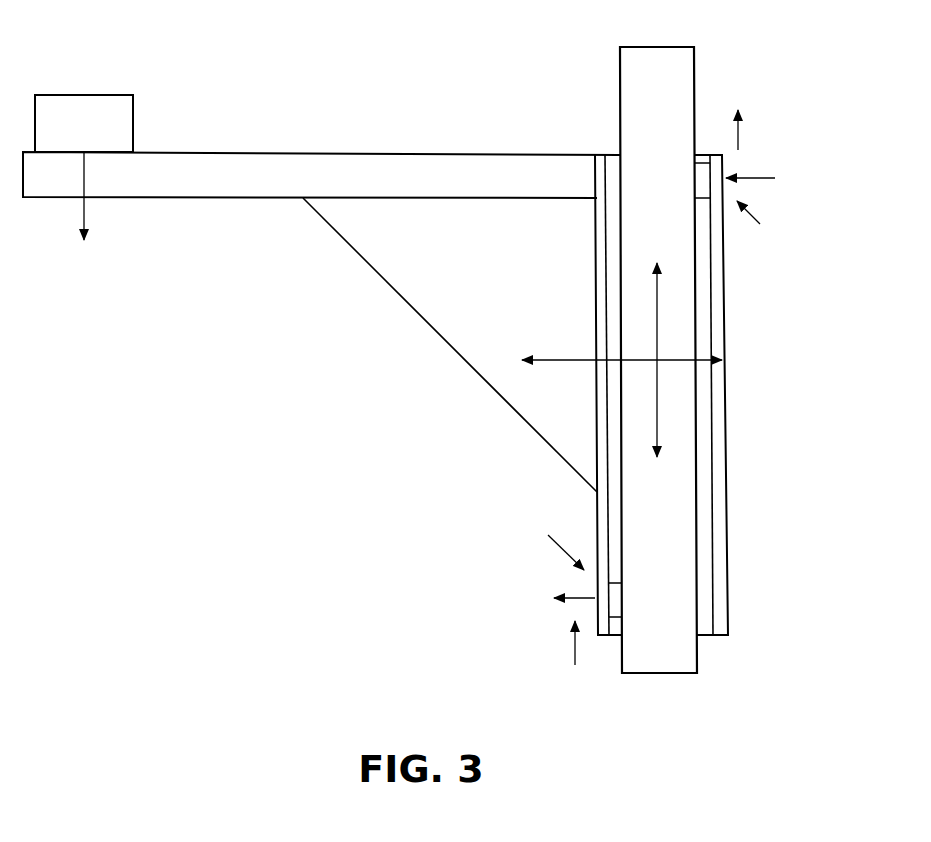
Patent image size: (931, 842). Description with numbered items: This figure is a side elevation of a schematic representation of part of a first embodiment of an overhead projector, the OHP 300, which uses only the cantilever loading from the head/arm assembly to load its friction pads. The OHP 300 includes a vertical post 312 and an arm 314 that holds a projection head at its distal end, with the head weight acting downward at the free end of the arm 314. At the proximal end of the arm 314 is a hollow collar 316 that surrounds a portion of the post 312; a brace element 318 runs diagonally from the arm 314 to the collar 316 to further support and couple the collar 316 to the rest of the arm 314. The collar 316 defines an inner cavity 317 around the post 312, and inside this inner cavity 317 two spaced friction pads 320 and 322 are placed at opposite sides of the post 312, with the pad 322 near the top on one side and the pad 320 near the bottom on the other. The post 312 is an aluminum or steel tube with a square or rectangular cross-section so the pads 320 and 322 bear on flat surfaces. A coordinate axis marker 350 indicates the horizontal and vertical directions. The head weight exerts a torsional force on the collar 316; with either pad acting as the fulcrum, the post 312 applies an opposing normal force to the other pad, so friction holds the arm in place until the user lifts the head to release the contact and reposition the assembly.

The OHP 300 is at (296, 447).
The vertical post 312 is at (681, 71).
The arm 314 is at (155, 199).
The hollow collar 316 is at (720, 426).
The inner cavity 317 is at (609, 176).
The brace element 318 is at (438, 306).
The friction pad 320 is at (615, 607).
The friction pad 322 is at (702, 170).
The coordinate axes 350 is at (668, 358).